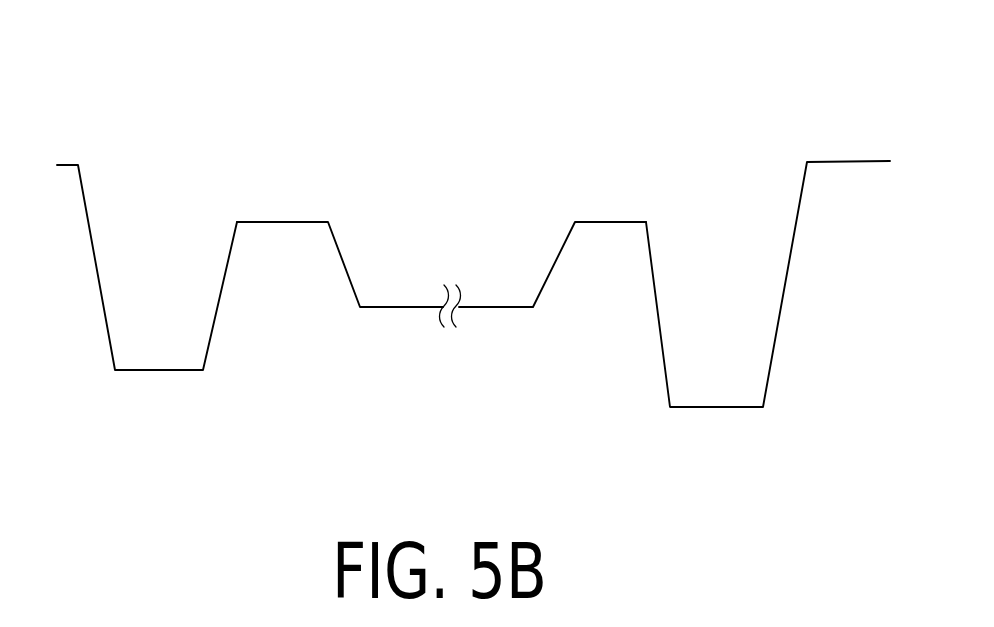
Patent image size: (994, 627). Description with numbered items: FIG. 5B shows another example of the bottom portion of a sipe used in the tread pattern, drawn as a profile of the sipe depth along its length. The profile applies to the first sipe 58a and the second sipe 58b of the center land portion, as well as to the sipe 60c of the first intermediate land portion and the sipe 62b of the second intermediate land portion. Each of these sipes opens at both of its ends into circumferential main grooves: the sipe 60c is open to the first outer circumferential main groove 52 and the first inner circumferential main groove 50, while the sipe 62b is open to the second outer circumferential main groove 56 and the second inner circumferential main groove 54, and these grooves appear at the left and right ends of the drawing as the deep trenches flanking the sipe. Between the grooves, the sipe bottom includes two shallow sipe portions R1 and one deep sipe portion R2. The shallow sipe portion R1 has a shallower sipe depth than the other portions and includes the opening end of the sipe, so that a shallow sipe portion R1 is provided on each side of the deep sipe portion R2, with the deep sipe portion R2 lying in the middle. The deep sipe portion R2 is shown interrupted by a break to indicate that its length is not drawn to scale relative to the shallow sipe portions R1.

The first inner circumferential main groove 50 is at (473, 316).
The first outer circumferential main groove 52 is at (155, 353).
The second inner circumferential main groove 54 is at (473, 316).
The second outer circumferential main groove 56 is at (715, 393).
The first sipe 58a is at (445, 186).
The second sipe 58b is at (445, 186).
The sipe 60c is at (445, 186).
The sipe 62b is at (658, 140).
The shallow sipe portion R1 is at (353, 352).
The deep sipe portion R2 is at (528, 360).